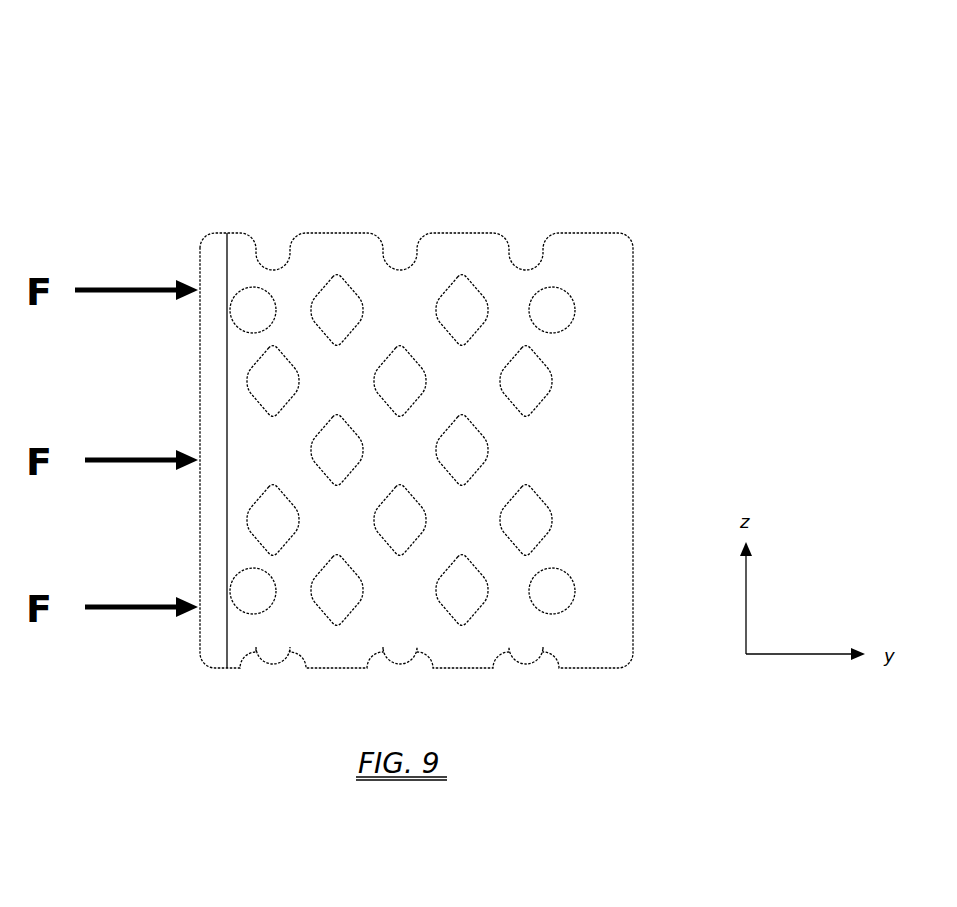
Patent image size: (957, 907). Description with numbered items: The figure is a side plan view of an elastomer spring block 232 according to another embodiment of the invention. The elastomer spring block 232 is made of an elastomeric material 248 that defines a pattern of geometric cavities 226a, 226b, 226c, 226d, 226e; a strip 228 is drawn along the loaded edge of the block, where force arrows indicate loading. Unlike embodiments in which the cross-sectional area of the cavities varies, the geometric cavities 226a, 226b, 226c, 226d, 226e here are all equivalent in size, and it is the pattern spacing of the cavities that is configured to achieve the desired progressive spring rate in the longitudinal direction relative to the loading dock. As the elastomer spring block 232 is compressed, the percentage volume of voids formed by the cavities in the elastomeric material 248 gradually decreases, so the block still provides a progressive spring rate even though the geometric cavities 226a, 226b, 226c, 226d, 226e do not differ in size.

The elastomer spring block 232 is at (380, 348).
The elastomeric material 248 is at (618, 419).
The mounting strip 228 is at (198, 533).
The geometric cavity 226a is at (247, 380).
The geometric cavity 226b is at (336, 272).
The geometric cavity 226c is at (400, 343).
The geometric cavity 226d is at (462, 272).
The geometric cavity 226e is at (545, 361).